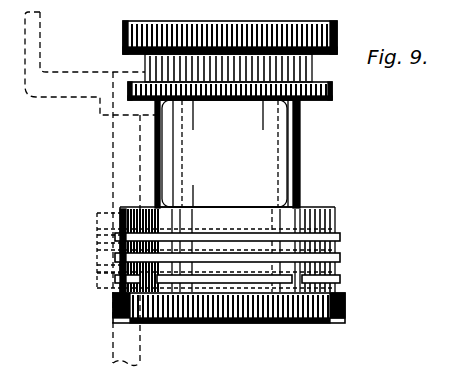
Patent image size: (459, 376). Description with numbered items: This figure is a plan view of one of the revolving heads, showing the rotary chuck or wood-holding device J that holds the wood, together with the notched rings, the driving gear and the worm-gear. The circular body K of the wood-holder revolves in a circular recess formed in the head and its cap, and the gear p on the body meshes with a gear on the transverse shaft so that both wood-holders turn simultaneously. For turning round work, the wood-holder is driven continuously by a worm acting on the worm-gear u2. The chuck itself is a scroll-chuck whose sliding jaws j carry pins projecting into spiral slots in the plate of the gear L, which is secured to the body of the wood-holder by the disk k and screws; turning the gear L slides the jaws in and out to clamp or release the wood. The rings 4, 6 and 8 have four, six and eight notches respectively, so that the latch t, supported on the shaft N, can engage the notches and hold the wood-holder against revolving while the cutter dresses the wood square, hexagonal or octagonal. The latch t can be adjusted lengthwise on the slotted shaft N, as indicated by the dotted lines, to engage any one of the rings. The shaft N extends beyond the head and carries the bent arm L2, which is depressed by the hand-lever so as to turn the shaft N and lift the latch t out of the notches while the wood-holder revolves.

The worm-gear u2 is at (230, 27).
The gear p is at (332, 90).
The circular body K is at (227, 154).
The bent arm L2 is at (90, 189).
The latch t is at (197, 323).
The sliding jaw j is at (311, 325).
The ring 6 is at (236, 238).
The ring 4 is at (236, 256).
The ring 8 is at (236, 278).
The rotary chuck J is at (242, 306).
The disk k is at (265, 324).
The gear L is at (113, 304).
The shaft N is at (137, 330).